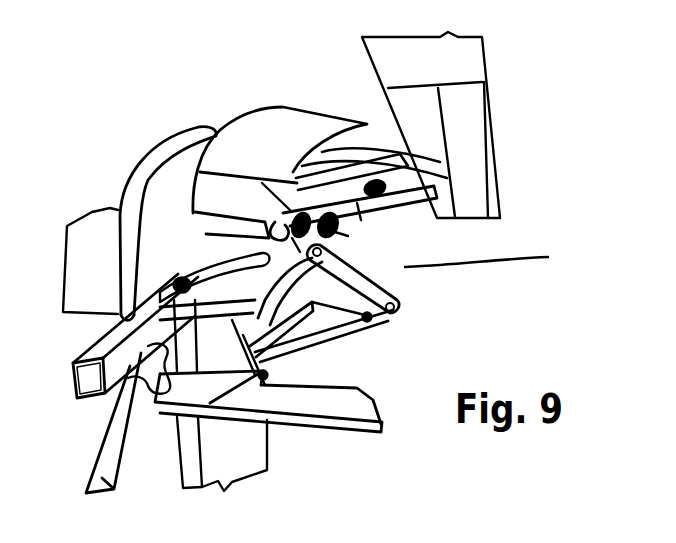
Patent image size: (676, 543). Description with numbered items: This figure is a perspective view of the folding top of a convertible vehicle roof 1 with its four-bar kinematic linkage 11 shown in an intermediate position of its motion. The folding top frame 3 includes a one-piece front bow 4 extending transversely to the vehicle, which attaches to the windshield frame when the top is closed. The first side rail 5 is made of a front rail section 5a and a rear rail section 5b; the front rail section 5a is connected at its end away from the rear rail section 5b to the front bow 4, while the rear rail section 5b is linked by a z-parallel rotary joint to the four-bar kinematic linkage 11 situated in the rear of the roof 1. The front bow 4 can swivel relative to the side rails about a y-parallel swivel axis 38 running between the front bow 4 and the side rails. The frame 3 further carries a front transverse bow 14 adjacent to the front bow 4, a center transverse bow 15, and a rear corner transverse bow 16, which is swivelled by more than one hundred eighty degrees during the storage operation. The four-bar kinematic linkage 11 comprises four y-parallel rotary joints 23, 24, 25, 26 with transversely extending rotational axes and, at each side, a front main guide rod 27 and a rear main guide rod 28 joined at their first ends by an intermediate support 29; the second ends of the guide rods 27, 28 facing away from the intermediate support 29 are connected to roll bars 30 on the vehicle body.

The convertible vehicle roof 1 is at (292, 100).
The folding top frame 3 is at (407, 177).
The front bow 4 is at (247, 133).
The first side rail 5 is at (328, 262).
The front rail section 5a is at (300, 186).
The rear rail section 5b is at (342, 197).
The four-bar kinematic linkage 11 is at (373, 333).
The front transverse bow 14 is at (440, 162).
The center transverse bow 15 is at (400, 213).
The rear corner transverse bow 16 is at (276, 319).
The rotary joint 23 is at (160, 328).
The rotary joint 24 is at (327, 267).
The rotary joint 25 is at (398, 306).
The rotary joint 26 is at (257, 382).
The front main guide rod 27 is at (180, 280).
The rear main guide rod 28 is at (309, 344).
The intermediate support 29 is at (493, 258).
The roll bar 30 is at (122, 388).
The swivel axis 38 is at (355, 171).